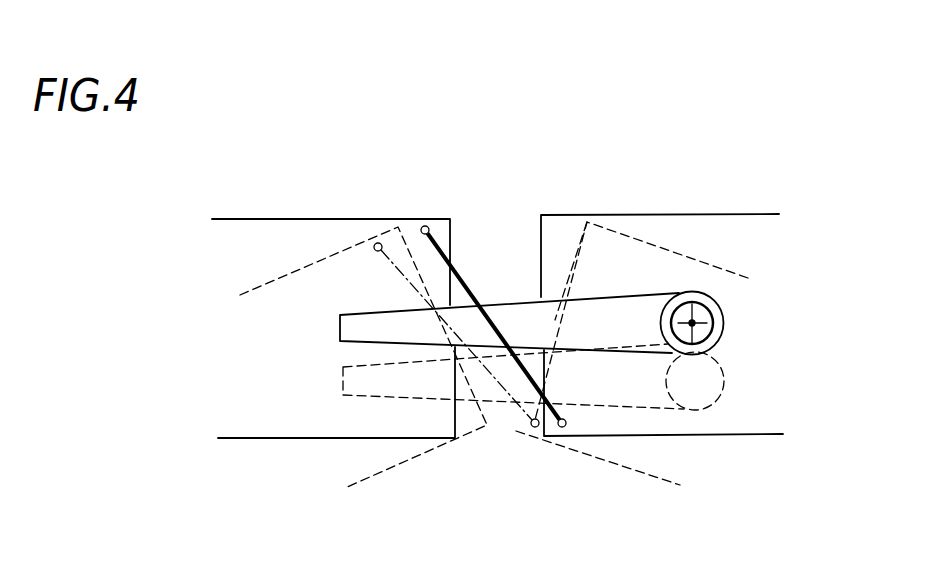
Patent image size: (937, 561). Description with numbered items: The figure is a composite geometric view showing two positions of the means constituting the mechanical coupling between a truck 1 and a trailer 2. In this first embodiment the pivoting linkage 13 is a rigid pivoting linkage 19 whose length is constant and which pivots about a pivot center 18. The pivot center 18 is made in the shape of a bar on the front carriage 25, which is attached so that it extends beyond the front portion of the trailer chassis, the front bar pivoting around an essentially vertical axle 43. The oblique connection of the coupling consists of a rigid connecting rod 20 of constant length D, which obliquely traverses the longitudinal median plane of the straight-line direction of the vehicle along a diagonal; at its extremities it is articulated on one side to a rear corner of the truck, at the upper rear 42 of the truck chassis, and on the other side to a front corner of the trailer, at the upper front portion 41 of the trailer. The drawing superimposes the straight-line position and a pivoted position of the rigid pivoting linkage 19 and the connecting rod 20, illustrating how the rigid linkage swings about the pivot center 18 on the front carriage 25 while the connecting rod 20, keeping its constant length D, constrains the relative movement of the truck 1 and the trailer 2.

The truck 1 is at (232, 240).
The trailer 2 is at (702, 230).
The pivoting linkage 13 is at (512, 332).
The rigid pivoting linkage 19 is at (523, 317).
The rigid connecting rod 20 is at (385, 258).
The upper front portion of the trailer 41 is at (577, 247).
The upper rear of truck chassis 42 is at (405, 248).
The essentially vertical axle 43 is at (692, 323).
The pivot center 18 is at (728, 314).
The front carriage 25 is at (722, 338).
The length of the connecting rod D is at (491, 268).